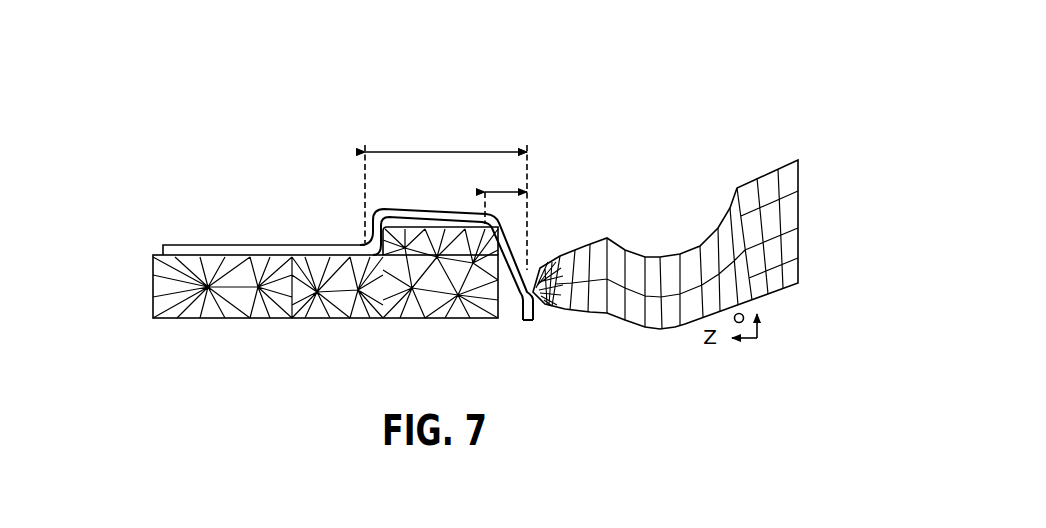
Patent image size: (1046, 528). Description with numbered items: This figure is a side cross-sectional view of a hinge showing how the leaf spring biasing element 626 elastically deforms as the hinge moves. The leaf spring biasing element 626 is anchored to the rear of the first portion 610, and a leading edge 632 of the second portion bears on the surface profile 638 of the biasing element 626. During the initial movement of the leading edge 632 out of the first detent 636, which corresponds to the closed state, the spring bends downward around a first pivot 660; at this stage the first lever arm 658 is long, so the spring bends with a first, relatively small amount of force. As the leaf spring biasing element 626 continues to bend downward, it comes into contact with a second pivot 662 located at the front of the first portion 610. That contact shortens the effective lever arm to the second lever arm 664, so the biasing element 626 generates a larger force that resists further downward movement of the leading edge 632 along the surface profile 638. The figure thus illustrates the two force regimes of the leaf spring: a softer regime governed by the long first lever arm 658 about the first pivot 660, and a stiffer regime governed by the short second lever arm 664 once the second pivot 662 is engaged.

The first portion 610 is at (238, 320).
The leaf spring biasing element 626 is at (228, 245).
The first pivot 660 is at (366, 243).
The second pivot 662 is at (484, 223).
The first detent 636 is at (523, 270).
The surface profile 638 is at (525, 280).
The leading edge 632 is at (542, 313).
The first lever arm 658 is at (438, 152).
The second lever arm 664 is at (507, 192).